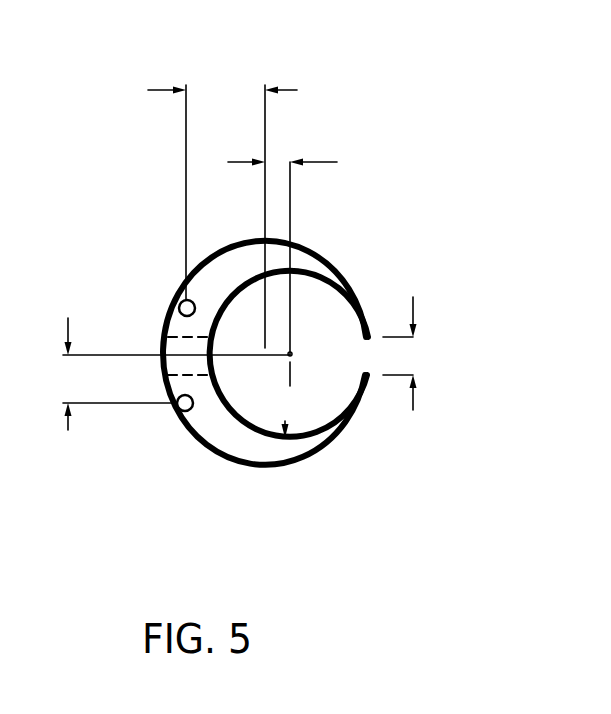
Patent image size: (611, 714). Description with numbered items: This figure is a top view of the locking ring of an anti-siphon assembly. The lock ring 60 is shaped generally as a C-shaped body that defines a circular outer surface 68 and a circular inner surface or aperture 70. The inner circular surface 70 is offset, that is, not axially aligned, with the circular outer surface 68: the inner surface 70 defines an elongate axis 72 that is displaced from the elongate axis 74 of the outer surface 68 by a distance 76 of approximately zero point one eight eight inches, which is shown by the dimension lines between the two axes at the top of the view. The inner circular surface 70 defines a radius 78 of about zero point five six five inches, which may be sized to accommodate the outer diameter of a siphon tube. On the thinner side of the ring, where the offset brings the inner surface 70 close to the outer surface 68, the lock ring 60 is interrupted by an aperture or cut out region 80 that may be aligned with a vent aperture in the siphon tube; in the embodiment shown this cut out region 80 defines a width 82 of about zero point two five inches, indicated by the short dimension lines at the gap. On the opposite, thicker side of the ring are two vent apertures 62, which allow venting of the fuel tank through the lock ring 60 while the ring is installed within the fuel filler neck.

The lock ring 60 is at (273, 367).
The vent apertures 62 is at (177, 293).
The circular outer surface 68 is at (167, 325).
The circular inner surface 70 is at (365, 310).
The elongate axis 72 is at (298, 354).
The elongate axis 74 is at (265, 366).
The distance 76 is at (316, 160).
The radius 78 is at (293, 400).
The cut out region 80 is at (372, 376).
The width 82 is at (420, 398).